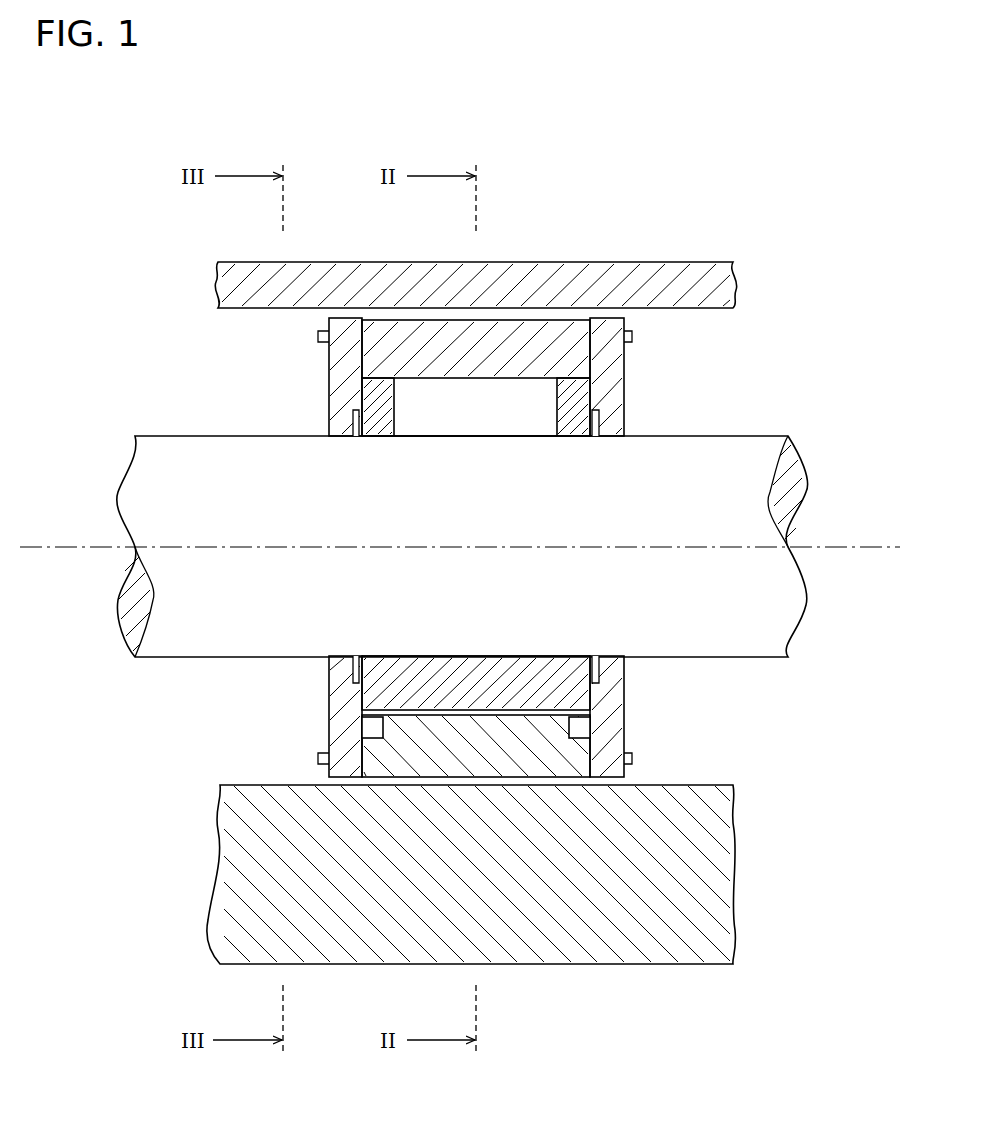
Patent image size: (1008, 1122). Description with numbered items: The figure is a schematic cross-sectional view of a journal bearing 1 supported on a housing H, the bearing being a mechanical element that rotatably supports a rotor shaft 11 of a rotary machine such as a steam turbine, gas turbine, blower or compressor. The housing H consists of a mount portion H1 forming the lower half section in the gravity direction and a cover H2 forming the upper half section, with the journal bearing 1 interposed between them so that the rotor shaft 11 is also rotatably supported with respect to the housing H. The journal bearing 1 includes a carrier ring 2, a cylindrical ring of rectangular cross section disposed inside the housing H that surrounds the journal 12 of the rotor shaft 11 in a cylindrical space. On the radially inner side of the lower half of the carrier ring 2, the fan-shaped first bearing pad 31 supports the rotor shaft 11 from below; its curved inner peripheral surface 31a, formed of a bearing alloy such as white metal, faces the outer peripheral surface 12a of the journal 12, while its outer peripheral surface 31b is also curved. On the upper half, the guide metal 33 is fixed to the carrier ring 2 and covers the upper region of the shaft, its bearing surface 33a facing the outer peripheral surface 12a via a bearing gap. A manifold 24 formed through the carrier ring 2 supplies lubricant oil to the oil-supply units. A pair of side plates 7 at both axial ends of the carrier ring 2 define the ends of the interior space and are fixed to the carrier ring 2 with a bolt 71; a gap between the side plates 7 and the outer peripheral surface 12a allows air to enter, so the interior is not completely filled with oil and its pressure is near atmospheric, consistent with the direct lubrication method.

The housing H is at (660, 218).
The mount portion H1 is at (705, 886).
The cover H2 is at (736, 288).
The journal bearing 1 is at (480, 414).
The carrier ring 2 is at (366, 378).
The side plate 7 is at (328, 670).
The rotor shaft 11 is at (735, 440).
The journal 12 is at (428, 470).
The outer peripheral surface of the journal 12a is at (480, 433).
The manifold 24 is at (578, 728).
The first bearing pad 31 is at (378, 690).
The inner peripheral surface 31a is at (375, 656).
The outer peripheral surface 31b is at (378, 732).
The guide metal 33 is at (362, 402).
The bearing surface 33a is at (378, 438).
The bolt 71 is at (318, 336).